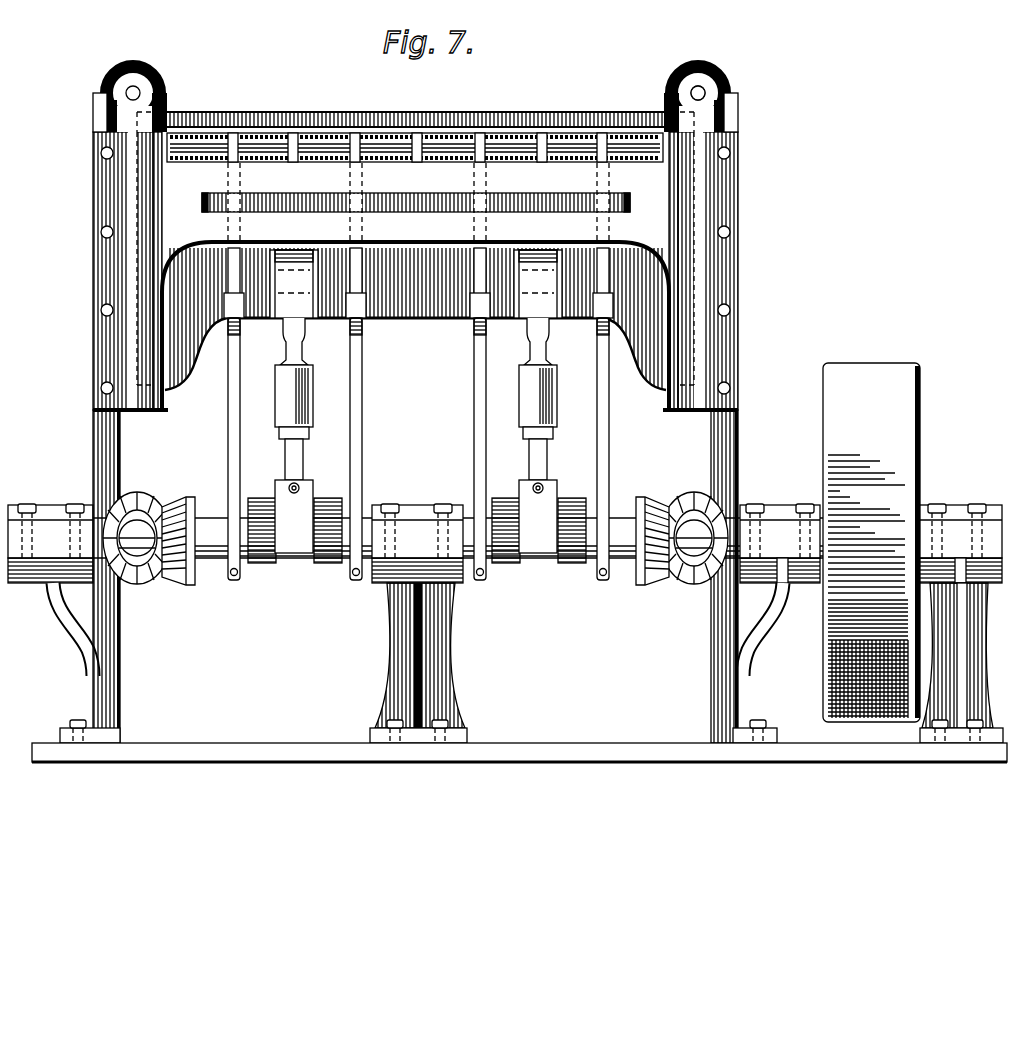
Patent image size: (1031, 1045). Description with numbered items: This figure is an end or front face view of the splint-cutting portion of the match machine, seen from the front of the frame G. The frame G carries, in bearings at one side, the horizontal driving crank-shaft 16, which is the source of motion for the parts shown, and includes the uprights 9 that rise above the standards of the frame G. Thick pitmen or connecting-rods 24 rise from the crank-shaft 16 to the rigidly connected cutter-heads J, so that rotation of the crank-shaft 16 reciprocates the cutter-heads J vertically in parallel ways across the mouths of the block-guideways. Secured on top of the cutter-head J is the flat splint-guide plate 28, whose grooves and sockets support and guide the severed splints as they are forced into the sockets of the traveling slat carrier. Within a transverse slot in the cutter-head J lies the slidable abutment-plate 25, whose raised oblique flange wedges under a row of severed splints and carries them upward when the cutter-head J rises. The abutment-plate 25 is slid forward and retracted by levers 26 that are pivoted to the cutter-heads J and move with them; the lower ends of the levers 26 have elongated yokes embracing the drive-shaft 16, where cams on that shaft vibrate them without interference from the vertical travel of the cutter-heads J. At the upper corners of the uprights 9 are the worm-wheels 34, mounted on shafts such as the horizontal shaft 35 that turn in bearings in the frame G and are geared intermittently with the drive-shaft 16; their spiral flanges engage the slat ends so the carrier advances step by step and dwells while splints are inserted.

The worm-wheel 34 is at (160, 93).
The shaft 35 is at (691, 92).
The slidable abutment-plate 25 is at (268, 136).
The splint-guide plate 28 is at (396, 115).
The frame upright 9 is at (753, 193).
The cutter-head J is at (415, 326).
The connecting-rod 24 is at (306, 378).
The lever 26 is at (229, 405).
The driving crank-shaft 16 is at (205, 517).
The frame G is at (97, 443).